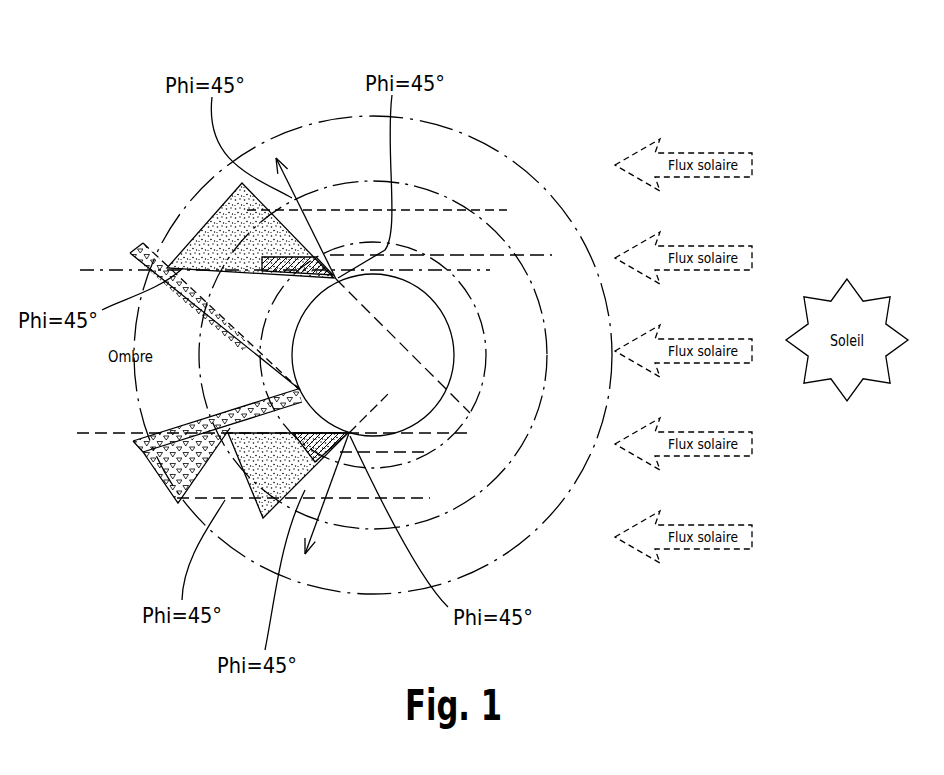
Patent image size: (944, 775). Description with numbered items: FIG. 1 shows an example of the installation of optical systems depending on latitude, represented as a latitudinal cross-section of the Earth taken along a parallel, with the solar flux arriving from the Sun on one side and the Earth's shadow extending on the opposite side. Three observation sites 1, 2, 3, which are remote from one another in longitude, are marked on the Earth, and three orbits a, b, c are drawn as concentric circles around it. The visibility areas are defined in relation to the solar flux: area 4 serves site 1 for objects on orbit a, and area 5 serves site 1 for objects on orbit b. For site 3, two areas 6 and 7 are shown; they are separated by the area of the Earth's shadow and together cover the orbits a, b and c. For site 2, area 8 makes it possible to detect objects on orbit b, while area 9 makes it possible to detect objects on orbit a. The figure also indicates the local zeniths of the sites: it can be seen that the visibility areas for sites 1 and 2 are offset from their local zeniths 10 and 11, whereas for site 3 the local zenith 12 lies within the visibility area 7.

The site 1 is at (336, 281).
The site 2 is at (349, 432).
The site 3 is at (298, 388).
The area 4 is at (306, 244).
The area 5 is at (215, 209).
The area 6 is at (133, 255).
The area 7 is at (173, 482).
The area 8 is at (272, 485).
The area 9 is at (325, 457).
The local zenith 10 is at (292, 195).
The local zenith 11 is at (318, 525).
The local zenith 12 is at (187, 436).
The orbit a is at (410, 247).
The orbit b is at (372, 182).
The orbit c is at (448, 127).